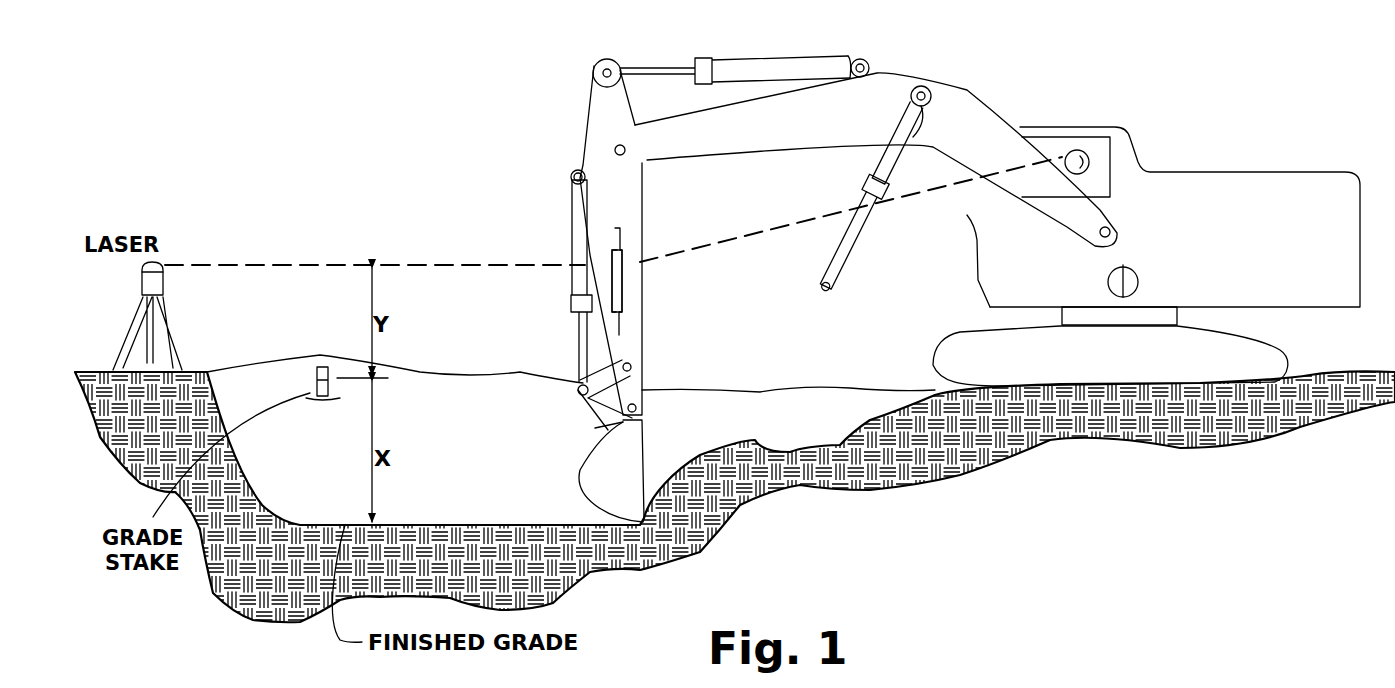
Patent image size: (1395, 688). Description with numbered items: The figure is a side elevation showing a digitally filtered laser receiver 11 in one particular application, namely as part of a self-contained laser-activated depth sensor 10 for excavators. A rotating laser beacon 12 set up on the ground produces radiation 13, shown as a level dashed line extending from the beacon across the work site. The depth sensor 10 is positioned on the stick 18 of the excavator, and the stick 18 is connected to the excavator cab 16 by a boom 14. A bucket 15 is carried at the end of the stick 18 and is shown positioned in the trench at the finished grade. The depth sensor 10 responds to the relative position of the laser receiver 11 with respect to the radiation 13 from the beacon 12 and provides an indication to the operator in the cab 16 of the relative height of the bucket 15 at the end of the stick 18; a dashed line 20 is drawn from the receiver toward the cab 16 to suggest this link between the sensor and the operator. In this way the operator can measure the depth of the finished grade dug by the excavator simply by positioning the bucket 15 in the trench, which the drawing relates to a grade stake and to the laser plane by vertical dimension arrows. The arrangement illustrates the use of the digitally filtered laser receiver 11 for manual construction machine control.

The depth sensor 10 is at (610, 230).
The digitally filtered laser receiver 11 is at (613, 273).
The rotating laser beacon 12 is at (160, 265).
The radiation 13 is at (330, 265).
The boom 14 is at (972, 92).
The bucket 15 is at (577, 483).
The excavator cab 16 is at (1078, 148).
The stick 18 is at (643, 170).
The line of sight 20 is at (742, 238).